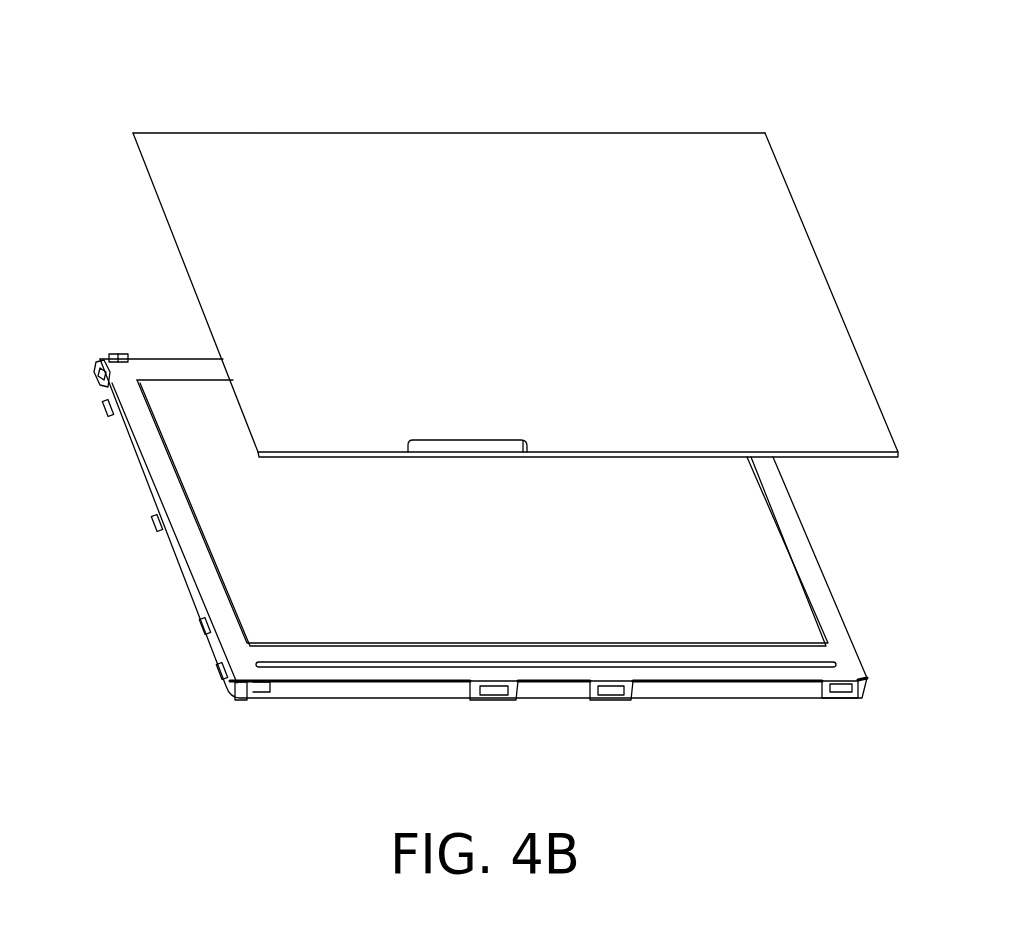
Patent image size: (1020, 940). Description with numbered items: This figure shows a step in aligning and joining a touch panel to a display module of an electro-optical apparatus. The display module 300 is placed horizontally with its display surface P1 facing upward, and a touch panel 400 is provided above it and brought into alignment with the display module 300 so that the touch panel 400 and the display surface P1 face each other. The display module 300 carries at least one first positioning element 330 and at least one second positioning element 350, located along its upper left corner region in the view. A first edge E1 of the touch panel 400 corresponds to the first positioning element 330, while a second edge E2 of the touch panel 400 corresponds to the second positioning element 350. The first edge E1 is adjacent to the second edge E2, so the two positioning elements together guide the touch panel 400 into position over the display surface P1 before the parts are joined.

The display module 300 is at (452, 526).
The first positioning element 330 is at (120, 353).
The second positioning element 350 is at (104, 383).
The touch panel 400 is at (485, 261).
The first edge E1 is at (255, 132).
The second edge E2 is at (236, 397).
The display surface P1 is at (763, 582).